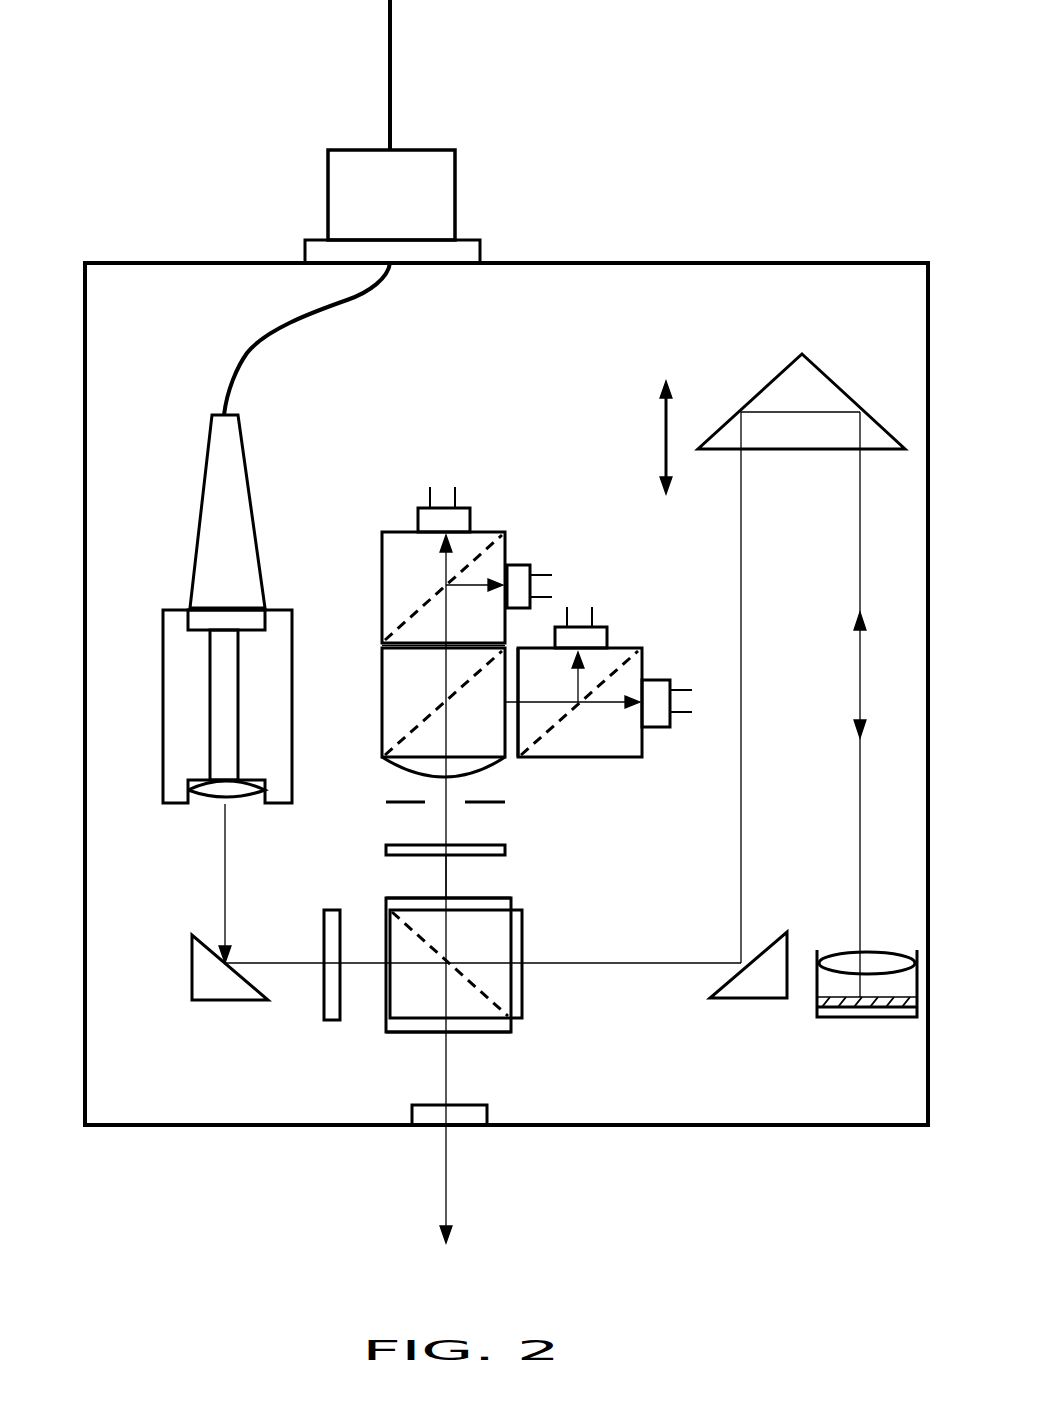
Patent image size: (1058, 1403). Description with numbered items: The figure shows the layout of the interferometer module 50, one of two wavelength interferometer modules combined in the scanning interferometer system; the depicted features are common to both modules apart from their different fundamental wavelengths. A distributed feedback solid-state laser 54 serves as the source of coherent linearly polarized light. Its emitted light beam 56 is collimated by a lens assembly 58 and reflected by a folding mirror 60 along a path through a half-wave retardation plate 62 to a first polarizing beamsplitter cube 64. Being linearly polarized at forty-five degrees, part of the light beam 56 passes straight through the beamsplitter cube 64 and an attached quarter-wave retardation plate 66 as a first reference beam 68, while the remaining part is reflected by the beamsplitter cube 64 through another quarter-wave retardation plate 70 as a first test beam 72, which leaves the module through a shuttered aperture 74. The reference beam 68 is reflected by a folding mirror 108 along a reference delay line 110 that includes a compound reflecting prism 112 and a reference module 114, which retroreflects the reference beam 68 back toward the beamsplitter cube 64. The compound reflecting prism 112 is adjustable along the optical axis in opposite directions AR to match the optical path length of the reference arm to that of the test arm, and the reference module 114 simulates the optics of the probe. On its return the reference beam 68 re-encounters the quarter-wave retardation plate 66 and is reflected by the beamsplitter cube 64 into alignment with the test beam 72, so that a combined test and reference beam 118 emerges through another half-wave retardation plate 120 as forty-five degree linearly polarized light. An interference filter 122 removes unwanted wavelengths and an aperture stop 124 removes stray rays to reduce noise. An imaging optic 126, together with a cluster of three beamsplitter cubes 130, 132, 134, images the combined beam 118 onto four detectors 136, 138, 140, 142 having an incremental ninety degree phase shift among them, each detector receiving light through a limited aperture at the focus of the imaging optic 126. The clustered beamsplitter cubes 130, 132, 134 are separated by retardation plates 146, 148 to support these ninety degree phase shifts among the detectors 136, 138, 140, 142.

The interferometer module 50 is at (183, 256).
The distributed feedback solid-state laser 54 is at (212, 700).
The light beam 56 is at (225, 880).
The lens assembly 58 is at (212, 803).
The folding mirror 60 is at (220, 1007).
The half-wave retardation plate 62 is at (323, 993).
The first polarizing beamsplitter cube 64 is at (403, 992).
The quarter-wave retardation plate 66 is at (522, 997).
The first reference beam 68 is at (640, 963).
The quarter-wave retardation plate 70 is at (482, 1033).
The first test beam 72 is at (450, 1168).
The shuttered aperture 74 is at (468, 1128).
The folding mirror 108 is at (757, 1000).
The reference delay line 110 is at (730, 570).
The compound reflecting prism 112 is at (771, 379).
The reference module 114 is at (887, 1018).
The combined test and reference beam 118 is at (500, 876).
The half-wave retardation plate 120 is at (420, 896).
The interference filter 122 is at (400, 848).
The aperture stop 124 is at (505, 803).
The imaging optic 126 is at (382, 778).
The beamsplitter cube 130 is at (395, 663).
The beamsplitter cube 132 is at (615, 743).
The beamsplitter cube 134 is at (402, 577).
The detector 136 is at (663, 680).
The detector 138 is at (603, 632).
The detector 140 is at (531, 573).
The detector 142 is at (473, 513).
The retardation plate 146 is at (383, 645).
The retardation plate 148 is at (513, 760).
The adjustment directions AR is at (660, 445).